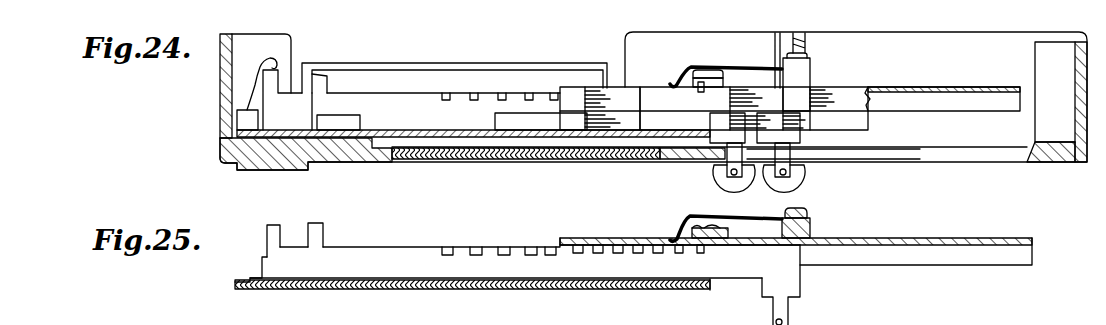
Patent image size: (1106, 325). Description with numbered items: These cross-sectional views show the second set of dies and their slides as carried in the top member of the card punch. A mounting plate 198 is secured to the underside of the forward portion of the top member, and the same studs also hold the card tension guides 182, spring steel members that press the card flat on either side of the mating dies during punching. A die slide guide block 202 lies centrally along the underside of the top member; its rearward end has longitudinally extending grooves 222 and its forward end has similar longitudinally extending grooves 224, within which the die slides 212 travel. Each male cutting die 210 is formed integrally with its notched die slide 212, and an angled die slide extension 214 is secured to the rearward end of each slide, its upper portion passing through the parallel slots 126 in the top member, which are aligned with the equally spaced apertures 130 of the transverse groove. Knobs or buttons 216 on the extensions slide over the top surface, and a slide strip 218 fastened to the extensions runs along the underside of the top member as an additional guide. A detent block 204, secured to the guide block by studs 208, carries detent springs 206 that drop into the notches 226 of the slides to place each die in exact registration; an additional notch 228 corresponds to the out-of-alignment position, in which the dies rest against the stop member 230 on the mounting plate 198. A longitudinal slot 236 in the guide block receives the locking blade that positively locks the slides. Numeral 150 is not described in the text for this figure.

In FIG. 24, the parallel slots 126 is at (994, 155).
In FIG. 24, the apertures 130 is at (667, 157).
In FIG. 24, the housing side wall 150 is at (220, 86).
In FIG. 24, the card tension guides 182 is at (523, 63).
In FIG. 24, the mounting plate 198 is at (445, 135).
In FIG. 25, the mounting plate 198 is at (645, 290).
In FIG. 24, the die slide guide block 202 is at (754, 108).
In FIG. 24, the detent block 204 is at (802, 73).
In FIG. 25, the detent block 204 is at (812, 227).
In FIG. 24, the detent springs 206 is at (730, 67).
In FIG. 25, the detent springs 206 is at (688, 215).
In FIG. 25, the studs 208 is at (812, 210).
In FIG. 24, the male cutting dies 210 is at (280, 78).
In FIG. 25, the male cutting dies 210 is at (318, 233).
In FIG. 24, the die slides 212 is at (413, 113).
In FIG. 25, the die slides 212 is at (413, 271).
In FIG. 24, the angled die slide extension 214 is at (800, 133).
In FIG. 25, the angled die slide extension 214 is at (790, 317).
In FIG. 24, the knobs or buttons 216 is at (810, 180).
In FIG. 24, the slide strip 218 is at (613, 160).
In FIG. 24, the longitudinally extending grooves 222 is at (973, 105).
In FIG. 25, the longitudinally extending grooves 224 is at (712, 288).
In FIG. 25, the notches 226 is at (503, 250).
In FIG. 25, the additional notch 228 is at (703, 248).
In FIG. 24, the stop member 230 is at (257, 83).
In FIG. 24, the longitudinal slot 236 is at (704, 86).
In FIG. 25, the longitudinal slot 236 is at (728, 232).